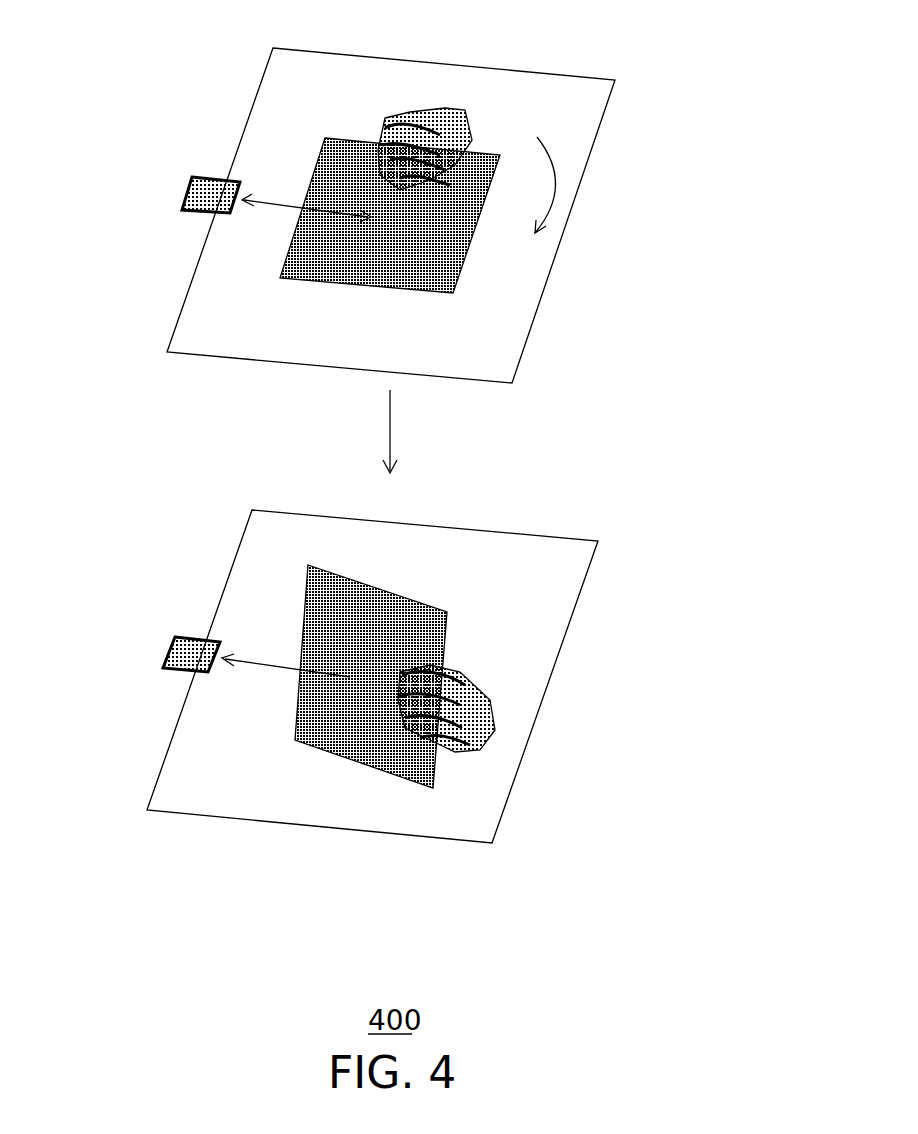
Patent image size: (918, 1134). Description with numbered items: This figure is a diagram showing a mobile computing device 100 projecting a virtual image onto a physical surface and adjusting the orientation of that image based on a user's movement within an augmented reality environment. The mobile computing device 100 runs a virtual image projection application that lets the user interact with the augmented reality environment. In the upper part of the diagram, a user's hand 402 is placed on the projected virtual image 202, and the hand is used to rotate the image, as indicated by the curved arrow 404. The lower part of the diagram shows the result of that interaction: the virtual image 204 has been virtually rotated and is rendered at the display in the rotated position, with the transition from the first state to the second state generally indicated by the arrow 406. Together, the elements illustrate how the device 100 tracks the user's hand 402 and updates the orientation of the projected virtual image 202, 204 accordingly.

The mobile computing device 100 is at (184, 195).
The virtual image 202 is at (278, 137).
The virtual image 204 is at (467, 252).
The user's hand 402 is at (452, 112).
The arrow 404 is at (552, 160).
The arrow 406 is at (393, 445).